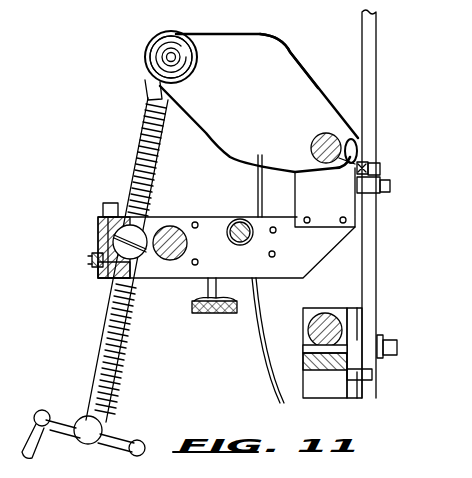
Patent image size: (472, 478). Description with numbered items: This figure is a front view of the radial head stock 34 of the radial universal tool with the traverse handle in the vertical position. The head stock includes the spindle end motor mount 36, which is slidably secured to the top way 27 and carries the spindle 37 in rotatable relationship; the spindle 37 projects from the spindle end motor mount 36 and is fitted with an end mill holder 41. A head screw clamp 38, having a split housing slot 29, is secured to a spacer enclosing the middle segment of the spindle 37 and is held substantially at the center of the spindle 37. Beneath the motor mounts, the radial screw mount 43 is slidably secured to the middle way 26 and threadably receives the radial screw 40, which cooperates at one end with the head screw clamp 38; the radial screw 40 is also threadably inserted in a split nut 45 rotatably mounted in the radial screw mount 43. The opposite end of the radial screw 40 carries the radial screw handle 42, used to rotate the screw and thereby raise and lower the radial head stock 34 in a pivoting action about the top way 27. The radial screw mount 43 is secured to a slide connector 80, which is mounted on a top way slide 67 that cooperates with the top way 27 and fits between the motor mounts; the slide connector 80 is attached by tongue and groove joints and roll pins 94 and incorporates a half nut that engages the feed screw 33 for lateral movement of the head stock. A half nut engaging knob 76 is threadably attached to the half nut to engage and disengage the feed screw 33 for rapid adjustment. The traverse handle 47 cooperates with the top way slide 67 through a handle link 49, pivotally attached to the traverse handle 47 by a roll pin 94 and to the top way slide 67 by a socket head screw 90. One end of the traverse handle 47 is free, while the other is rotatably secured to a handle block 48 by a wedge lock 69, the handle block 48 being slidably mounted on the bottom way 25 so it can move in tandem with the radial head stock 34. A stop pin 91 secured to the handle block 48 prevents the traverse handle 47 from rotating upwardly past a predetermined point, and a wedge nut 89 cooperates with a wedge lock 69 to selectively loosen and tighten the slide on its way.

The bottom way 25 is at (326, 312).
The middle way 26 is at (184, 228).
The top way 27 is at (318, 135).
The split housing slot 29 is at (356, 152).
The feed screw 33 is at (240, 219).
The radial head stock 34 is at (296, 42).
The spindle end motor mount 36 is at (250, 98).
The spindle 37 is at (160, 57).
The head screw clamp 38 is at (147, 88).
The radial screw 40 is at (112, 350).
The end mill holder 41 is at (179, 56).
The radial screw handle 42 is at (102, 424).
The radial screw mount 43 is at (128, 268).
The split nut 45 is at (150, 228).
The traverse handle 47 is at (377, 40).
The handle block 48 is at (324, 386).
The handle link 49 is at (381, 170).
The top way slide 67 is at (335, 210).
The wedge lock 69 is at (105, 203).
The half nut engaging knob 76 is at (228, 314).
The slide connector 80 is at (270, 276).
The wedge nut 89 is at (306, 350).
The socket head screw 90 is at (388, 188).
The stop pin 91 is at (372, 374).
The roll pin 94 is at (330, 228).